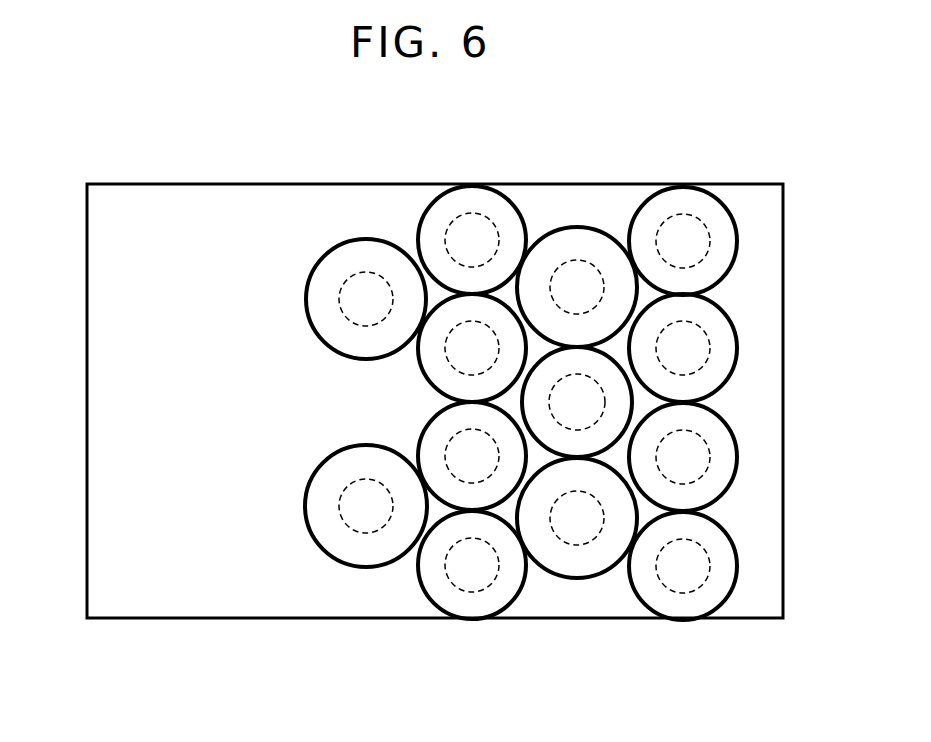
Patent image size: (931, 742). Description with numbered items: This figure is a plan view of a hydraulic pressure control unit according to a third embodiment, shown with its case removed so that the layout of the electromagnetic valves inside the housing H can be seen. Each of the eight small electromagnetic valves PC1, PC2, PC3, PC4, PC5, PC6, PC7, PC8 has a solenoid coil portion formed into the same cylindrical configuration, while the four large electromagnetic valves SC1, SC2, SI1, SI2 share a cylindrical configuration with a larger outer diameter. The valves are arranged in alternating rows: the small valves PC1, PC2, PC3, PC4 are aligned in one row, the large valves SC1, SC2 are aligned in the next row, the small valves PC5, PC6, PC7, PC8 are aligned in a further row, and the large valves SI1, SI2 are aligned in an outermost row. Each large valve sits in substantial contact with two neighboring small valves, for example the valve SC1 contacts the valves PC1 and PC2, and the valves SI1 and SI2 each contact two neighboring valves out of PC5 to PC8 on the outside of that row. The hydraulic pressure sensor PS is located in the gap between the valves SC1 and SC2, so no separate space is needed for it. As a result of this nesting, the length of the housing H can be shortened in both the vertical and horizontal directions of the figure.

The housing H is at (140, 605).
The electromagnetic valve SI1 is at (325, 522).
The electromagnetic valve SI2 is at (328, 282).
The electromagnetic valve PC1 is at (693, 597).
The electromagnetic valve PC2 is at (722, 473).
The electromagnetic valve PC3 is at (722, 330).
The electromagnetic valve PC4 is at (695, 207).
The electromagnetic valve PC5 is at (448, 600).
The electromagnetic valve PC6 is at (437, 472).
The electromagnetic valve PC7 is at (438, 330).
The electromagnetic valve PC8 is at (453, 213).
The electromagnetic valve SC1 is at (593, 552).
The electromagnetic valve SC2 is at (595, 252).
The hydraulic pressure sensor PS is at (533, 413).